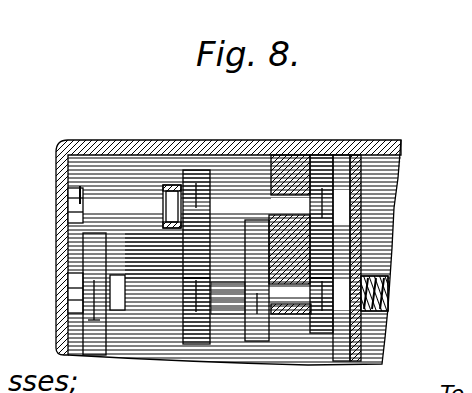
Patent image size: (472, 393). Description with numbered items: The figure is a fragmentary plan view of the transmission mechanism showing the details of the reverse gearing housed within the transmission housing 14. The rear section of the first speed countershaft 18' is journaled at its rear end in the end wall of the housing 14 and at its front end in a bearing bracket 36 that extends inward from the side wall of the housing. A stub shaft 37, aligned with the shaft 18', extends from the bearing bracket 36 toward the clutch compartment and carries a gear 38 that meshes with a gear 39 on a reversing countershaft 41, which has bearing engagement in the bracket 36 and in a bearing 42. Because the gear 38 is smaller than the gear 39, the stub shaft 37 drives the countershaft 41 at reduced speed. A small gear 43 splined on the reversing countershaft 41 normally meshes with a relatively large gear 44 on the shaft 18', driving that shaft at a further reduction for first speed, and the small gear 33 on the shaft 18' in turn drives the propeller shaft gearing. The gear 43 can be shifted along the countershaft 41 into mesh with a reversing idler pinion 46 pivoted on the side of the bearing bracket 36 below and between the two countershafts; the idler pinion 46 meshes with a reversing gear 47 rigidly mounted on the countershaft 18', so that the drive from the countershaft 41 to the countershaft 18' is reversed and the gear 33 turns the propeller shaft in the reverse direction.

The transmission housing 14 is at (247, 145).
The rear section of the first speed countershaft 18' is at (134, 305).
The small gear 33 is at (75, 244).
The bearing bracket 36 is at (318, 153).
The stub shaft 37 is at (381, 290).
The gear 38 is at (318, 325).
The gear 39 is at (327, 147).
The reversing countershaft 41 is at (112, 194).
The bearing 42 is at (60, 184).
The small gear 43 is at (190, 162).
The relatively large gear 44 is at (182, 324).
The reversing idler pinion 46 is at (176, 246).
The reversing gear 47 is at (248, 324).